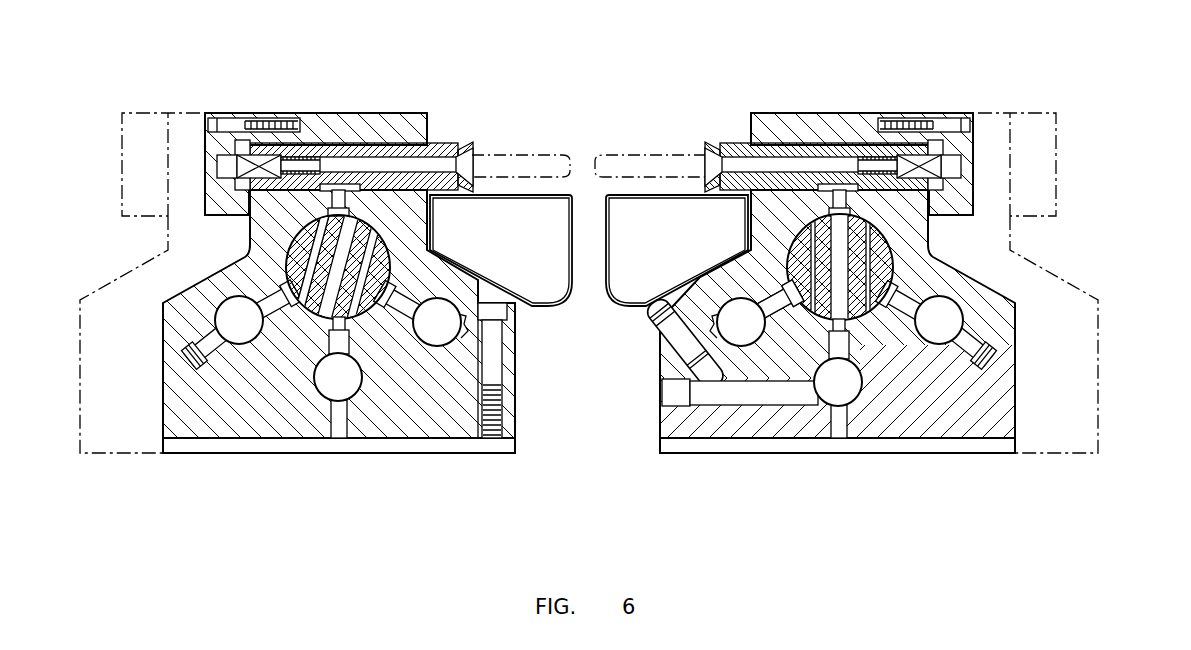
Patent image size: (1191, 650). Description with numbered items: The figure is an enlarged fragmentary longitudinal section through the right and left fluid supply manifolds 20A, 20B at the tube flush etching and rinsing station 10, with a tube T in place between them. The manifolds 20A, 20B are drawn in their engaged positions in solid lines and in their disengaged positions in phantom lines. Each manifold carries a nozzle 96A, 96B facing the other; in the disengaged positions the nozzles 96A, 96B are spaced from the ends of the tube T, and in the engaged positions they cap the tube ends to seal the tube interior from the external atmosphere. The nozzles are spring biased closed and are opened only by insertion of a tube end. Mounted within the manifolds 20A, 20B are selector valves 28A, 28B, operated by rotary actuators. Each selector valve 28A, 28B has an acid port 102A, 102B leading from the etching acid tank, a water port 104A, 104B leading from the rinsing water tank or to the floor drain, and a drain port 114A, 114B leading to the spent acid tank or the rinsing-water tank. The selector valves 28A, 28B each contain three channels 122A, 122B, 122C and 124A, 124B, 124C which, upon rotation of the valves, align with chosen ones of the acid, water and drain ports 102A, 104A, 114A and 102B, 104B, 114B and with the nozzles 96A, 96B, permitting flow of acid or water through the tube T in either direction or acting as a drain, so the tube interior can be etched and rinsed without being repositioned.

The tube flush etching and rinsing station 10 is at (988, 82).
The fluid supply manifold 20A is at (1015, 340).
The fluid supply manifold 20B is at (163, 340).
The selector valve 28A is at (803, 268).
The selector valve 28B is at (345, 240).
The nozzle 96A is at (737, 145).
The nozzle 96B is at (447, 145).
The tube T is at (552, 158).
The acid port 102A is at (940, 340).
The acid port 102B is at (428, 337).
The water port 104A is at (750, 337).
The water port 104B is at (240, 337).
The drain port 114A is at (846, 400).
The drain port 114B is at (323, 383).
The channel 122A is at (928, 248).
The channel 122B is at (803, 273).
The channel 122C is at (853, 322).
The channel 124A is at (378, 262).
The channel 124B is at (250, 248).
The channel 124C is at (320, 308).